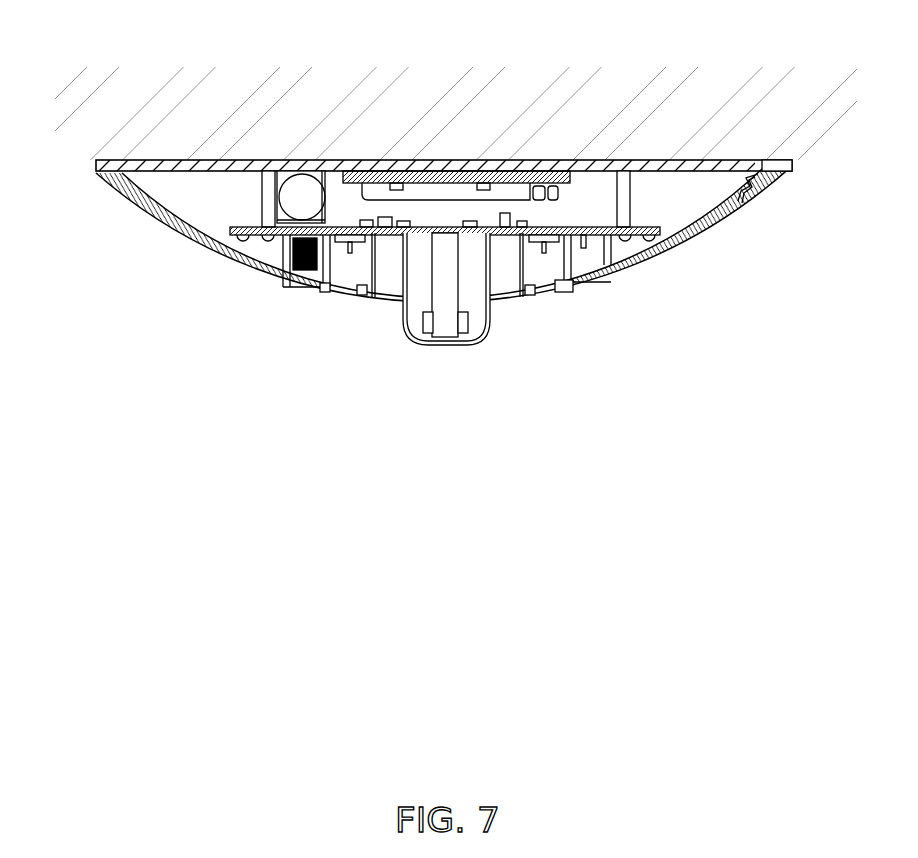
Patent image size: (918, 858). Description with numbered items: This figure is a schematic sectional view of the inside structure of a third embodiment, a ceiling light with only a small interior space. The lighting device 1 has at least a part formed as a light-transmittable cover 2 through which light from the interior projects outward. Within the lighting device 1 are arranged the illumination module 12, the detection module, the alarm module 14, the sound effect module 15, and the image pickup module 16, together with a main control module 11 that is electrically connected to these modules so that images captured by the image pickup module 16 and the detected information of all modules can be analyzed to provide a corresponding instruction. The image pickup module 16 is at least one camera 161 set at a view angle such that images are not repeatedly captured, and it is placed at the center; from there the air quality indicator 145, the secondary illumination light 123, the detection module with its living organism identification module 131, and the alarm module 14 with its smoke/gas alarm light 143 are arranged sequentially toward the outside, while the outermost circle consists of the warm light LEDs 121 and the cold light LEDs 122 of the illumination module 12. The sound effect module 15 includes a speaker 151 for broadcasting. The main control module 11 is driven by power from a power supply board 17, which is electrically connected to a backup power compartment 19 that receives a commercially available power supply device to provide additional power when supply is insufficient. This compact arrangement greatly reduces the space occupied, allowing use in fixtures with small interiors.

The lighting device 1 is at (102, 158).
The cover 2 is at (797, 180).
The main control module 11 is at (357, 224).
The illumination module 12 is at (665, 241).
The warm light LED 121 is at (270, 238).
The cold light LED 122 is at (648, 240).
The secondary illumination light 123 is at (350, 298).
The living organism identification module 131 is at (311, 286).
The alarm module 14 is at (583, 284).
The smoke/gas alarm light 143 is at (588, 277).
The air quality indicator 145 is at (388, 303).
The sound effect module 15 is at (748, 159).
The speaker 151 is at (794, 165).
The image pickup module 16 is at (432, 305).
The camera 161 is at (487, 297).
The power supply board 17 is at (742, 208).
The backup power compartment 19 is at (273, 162).